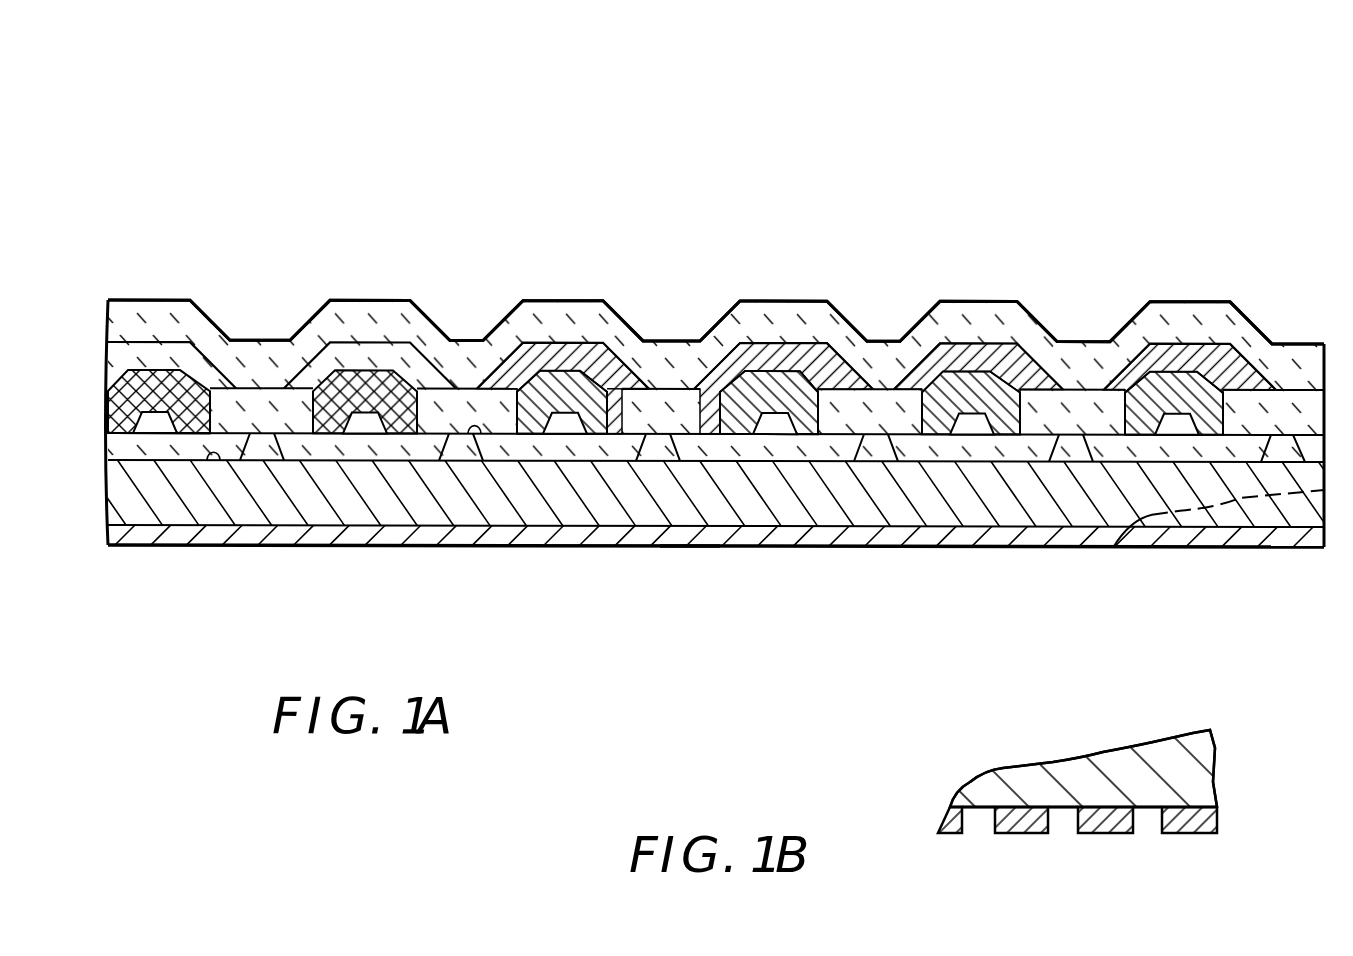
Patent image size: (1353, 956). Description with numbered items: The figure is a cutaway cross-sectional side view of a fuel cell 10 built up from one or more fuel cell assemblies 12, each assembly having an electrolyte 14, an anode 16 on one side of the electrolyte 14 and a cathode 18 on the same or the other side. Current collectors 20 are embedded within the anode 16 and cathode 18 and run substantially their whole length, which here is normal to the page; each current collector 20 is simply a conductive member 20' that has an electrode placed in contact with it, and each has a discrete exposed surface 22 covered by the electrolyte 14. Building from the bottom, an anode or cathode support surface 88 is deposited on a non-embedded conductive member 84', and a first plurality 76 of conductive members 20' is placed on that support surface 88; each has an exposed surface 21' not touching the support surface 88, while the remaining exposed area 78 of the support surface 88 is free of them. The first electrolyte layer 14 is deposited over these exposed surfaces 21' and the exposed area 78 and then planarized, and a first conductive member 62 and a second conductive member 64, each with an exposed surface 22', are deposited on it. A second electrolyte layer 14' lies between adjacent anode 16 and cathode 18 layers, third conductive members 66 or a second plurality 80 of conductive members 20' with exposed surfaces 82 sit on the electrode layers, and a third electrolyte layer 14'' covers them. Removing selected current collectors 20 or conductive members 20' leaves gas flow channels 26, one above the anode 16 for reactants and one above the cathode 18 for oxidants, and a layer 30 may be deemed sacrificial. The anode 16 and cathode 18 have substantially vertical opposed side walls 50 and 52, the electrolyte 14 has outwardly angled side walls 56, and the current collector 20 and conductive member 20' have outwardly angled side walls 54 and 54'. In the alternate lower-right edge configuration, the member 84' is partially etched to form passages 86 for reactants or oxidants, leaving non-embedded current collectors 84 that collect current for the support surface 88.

In FIG. 1A, the fuel cell 10 is at (875, 133).
In FIG. 1A, the fuel cell assembly 12 is at (330, 442).
In FIG. 1A, the electrolyte 14 is at (1108, 506).
In FIG. 1A, the second electrolyte layer 14' is at (1315, 344).
In FIG. 1A, the third electrolyte layer 14'' is at (1296, 260).
In FIG. 1A, the anode 16 is at (180, 377).
In FIG. 1B, the anode 16 is at (1030, 778).
In FIG. 1A, the cathode 18 is at (290, 305).
In FIG. 1B, the cathode 18 is at (1030, 778).
In FIG. 1A, the support surface 88 is at (880, 500).
In FIG. 1B, the support surface 88 is at (1030, 778).
In FIG. 1A, the current collector 20 is at (716, 547).
In FIG. 1A, the conductive member 20' is at (773, 386).
In FIG. 1A, the first plurality of conductive members 76 is at (1047, 450).
In FIG. 1A, the exposed surface 21' is at (491, 528).
In FIG. 1A, the exposed surface 22 is at (538, 536).
In FIG. 1A, the exposed surface 22' is at (365, 291).
In FIG. 1A, the gas flow channel 26 is at (166, 343).
In FIG. 1A, the sacrificial layer 30 is at (1012, 380).
In FIG. 1A, the opposed side walls of anode 50 is at (898, 388).
In FIG. 1A, the opposed side walls of cathode 52 is at (705, 405).
In FIG. 1A, the opposed side walls of current collector 54 is at (661, 315).
In FIG. 1A, the opposed side walls of conductive member 54' is at (634, 311).
In FIG. 1A, the opposed side walls of electrolyte 56 is at (317, 320).
In FIG. 1A, the first conductive member 62 is at (1203, 400).
In FIG. 1A, the second conductive member 64 is at (143, 408).
In FIG. 1A, the exposed area 78 is at (220, 460).
In FIG. 1A, the second plurality of conductive members 80 is at (755, 380).
In FIG. 1A, the third conductive members 66 is at (755, 380).
In FIG. 1A, the exposed surface 82 is at (1198, 335).
In FIG. 1B, the non-embedded current collector 84 is at (1077, 753).
In FIG. 1A, the non-embedded conductive member 84' is at (685, 619).
In FIG. 1B, the passage 86 is at (1063, 825).